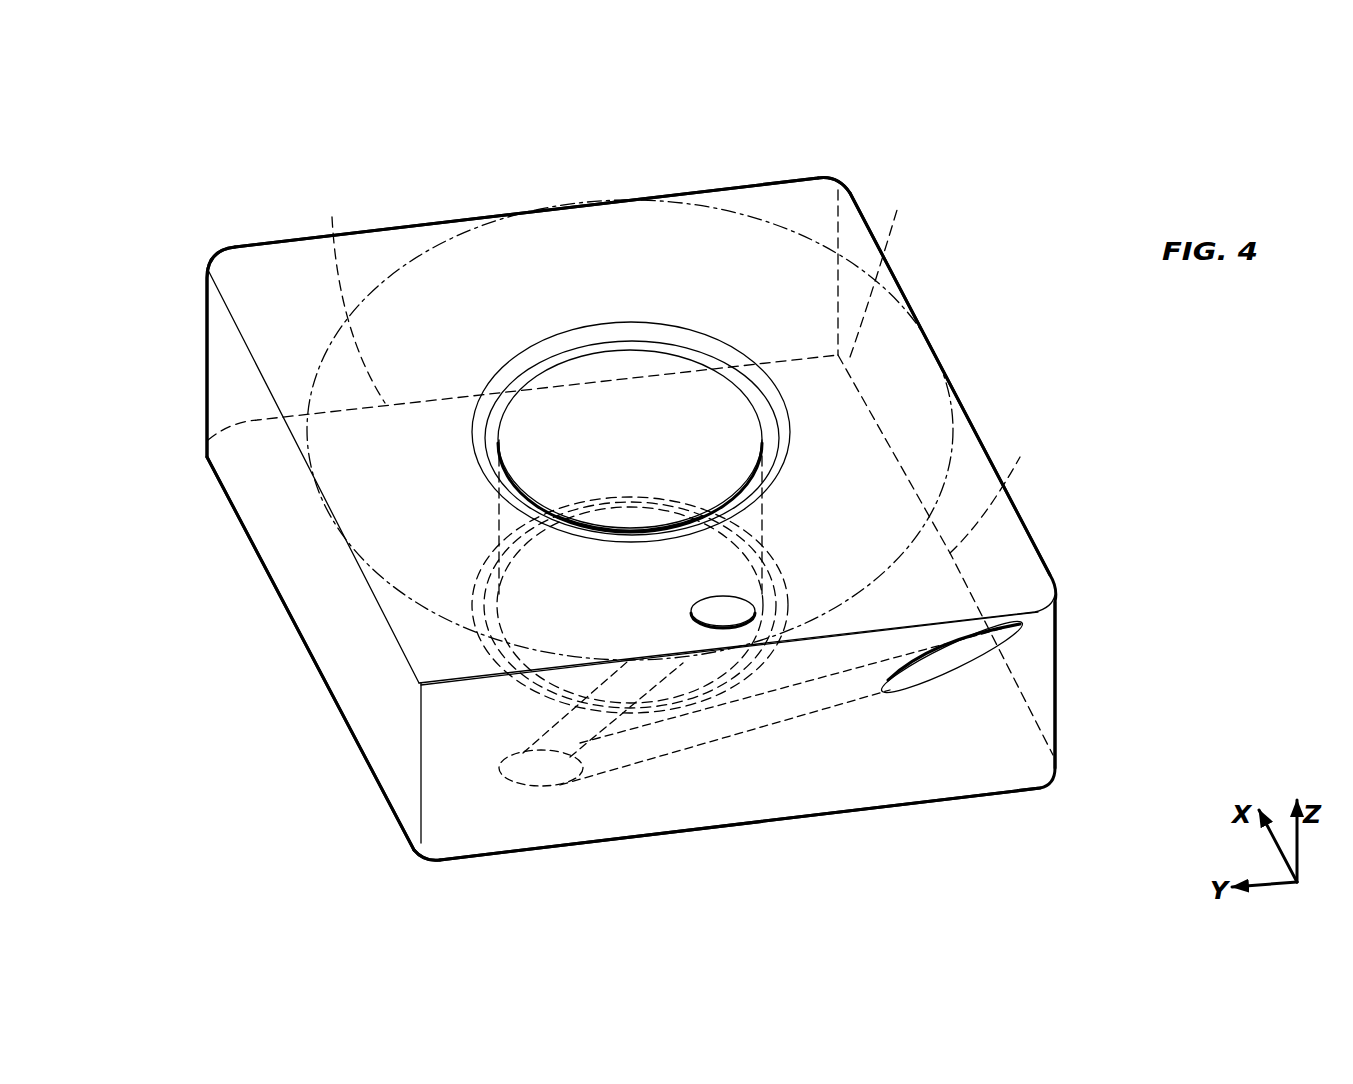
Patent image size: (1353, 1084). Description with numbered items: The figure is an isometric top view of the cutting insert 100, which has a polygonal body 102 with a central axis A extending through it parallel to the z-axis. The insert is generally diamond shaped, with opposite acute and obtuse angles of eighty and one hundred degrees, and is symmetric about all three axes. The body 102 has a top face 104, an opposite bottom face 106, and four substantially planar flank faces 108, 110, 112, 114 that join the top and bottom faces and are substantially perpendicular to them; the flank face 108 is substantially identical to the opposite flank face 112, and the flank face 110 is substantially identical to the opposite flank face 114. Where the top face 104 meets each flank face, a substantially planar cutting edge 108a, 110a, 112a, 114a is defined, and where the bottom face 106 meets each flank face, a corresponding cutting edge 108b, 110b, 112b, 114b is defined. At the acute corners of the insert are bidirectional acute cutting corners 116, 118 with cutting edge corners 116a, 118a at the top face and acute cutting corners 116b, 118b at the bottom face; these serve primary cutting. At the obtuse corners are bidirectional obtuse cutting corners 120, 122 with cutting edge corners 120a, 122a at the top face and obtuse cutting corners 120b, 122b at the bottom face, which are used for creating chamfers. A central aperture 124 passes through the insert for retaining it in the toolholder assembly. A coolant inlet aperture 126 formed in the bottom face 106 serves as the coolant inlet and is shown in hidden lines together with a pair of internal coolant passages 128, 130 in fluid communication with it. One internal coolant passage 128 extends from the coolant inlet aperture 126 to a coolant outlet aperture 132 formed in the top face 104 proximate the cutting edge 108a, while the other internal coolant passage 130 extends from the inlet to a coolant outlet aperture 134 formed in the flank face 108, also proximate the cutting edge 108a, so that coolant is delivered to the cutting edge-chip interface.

The cutting insert 100 is at (988, 147).
The polygonal body 102 is at (912, 277).
The top face 104 is at (286, 282).
The bottom face 106 is at (777, 846).
The flank face 108 is at (933, 770).
The cutting edge 108a is at (832, 626).
The cutting edge 108b is at (655, 843).
The flank face 110 is at (978, 410).
The cutting edge 110a is at (935, 345).
The cutting edge 110b is at (1020, 457).
The flank face 112 is at (555, 190).
The cutting edge 112a is at (462, 222).
The cutting edge 112b is at (348, 293).
The flank face 114 is at (275, 512).
The cutting edge 114a is at (240, 500).
The cutting edge 114b is at (276, 596).
The bidirectional acute cutting corner 116 is at (412, 752).
The cutting edge corner 116a is at (418, 685).
The bidirectional acute cutting corner 116b is at (418, 850).
The bidirectional acute cutting corner 118 is at (850, 180).
The cutting edge corner 118a is at (848, 182).
The bidirectional acute cutting corner 118b is at (890, 212).
The bidirectional obtuse cutting corner 120 is at (1045, 680).
The cutting edge corner 120a is at (1040, 612).
The bidirectional obtuse cutting corner 120b is at (1040, 788).
The bidirectional obtuse cutting corner 122 is at (190, 356).
The cutting edge corner 122a is at (215, 252).
The bidirectional obtuse cutting corner 122b is at (207, 457).
The central aperture 124 is at (552, 375).
The coolant inlet aperture 126 is at (553, 790).
The internal coolant passage 128 is at (623, 683).
The internal coolant passage 130 is at (735, 742).
The coolant outlet aperture 132 is at (718, 603).
The coolant outlet aperture 134 is at (920, 665).